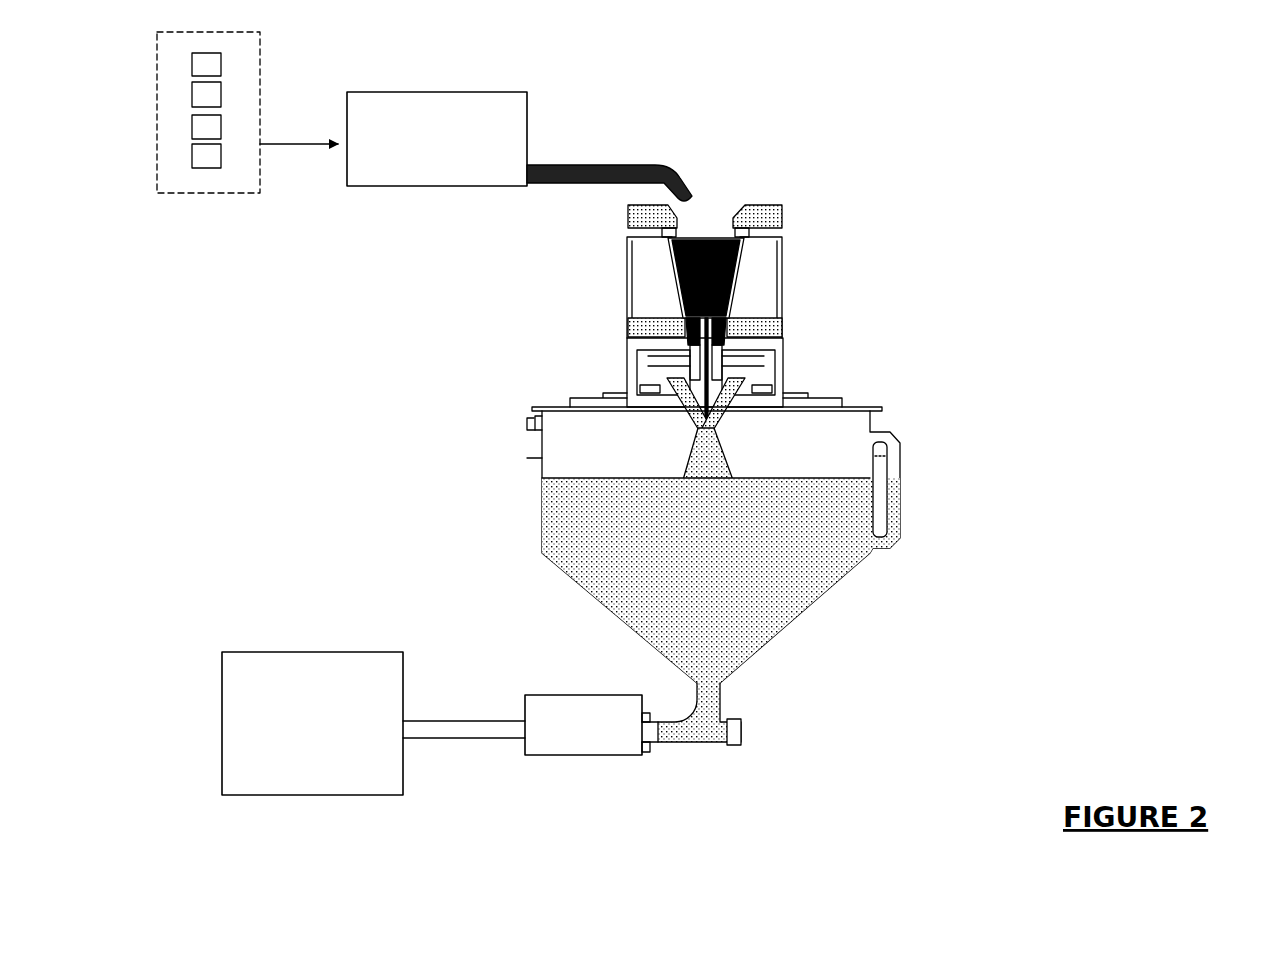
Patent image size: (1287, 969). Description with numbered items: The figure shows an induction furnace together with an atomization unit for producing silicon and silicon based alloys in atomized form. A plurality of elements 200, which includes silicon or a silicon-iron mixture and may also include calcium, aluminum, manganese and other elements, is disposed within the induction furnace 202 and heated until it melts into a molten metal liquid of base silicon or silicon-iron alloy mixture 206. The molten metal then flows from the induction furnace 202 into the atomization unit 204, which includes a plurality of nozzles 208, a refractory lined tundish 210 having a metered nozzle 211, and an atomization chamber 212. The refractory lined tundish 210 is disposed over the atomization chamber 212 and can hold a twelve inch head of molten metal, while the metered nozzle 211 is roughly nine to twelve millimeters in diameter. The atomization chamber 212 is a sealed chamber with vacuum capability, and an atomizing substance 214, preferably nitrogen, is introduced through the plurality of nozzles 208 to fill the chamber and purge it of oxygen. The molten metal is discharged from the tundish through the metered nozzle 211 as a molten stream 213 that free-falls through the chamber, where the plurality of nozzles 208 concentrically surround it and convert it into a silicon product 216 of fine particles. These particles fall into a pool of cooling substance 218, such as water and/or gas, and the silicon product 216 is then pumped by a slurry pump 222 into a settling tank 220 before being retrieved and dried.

The plurality of elements 200 is at (208, 193).
The induction furnace 202 is at (347, 186).
The atomization unit 204 is at (948, 176).
The base silicon or silicon-iron alloy mixture 206 is at (720, 242).
The plurality of nozzles 208 is at (680, 372).
The refractory lined tundish 210 is at (737, 277).
The metered nozzle 211 is at (682, 300).
The atomization chamber 212 is at (900, 458).
The molten stream 213 is at (706, 400).
The atomizing substance 214 is at (650, 393).
The silicon product 216 is at (700, 455).
The cooling substance 218 is at (810, 612).
The settling tank 220 is at (342, 795).
The slurry pump 222 is at (588, 757).